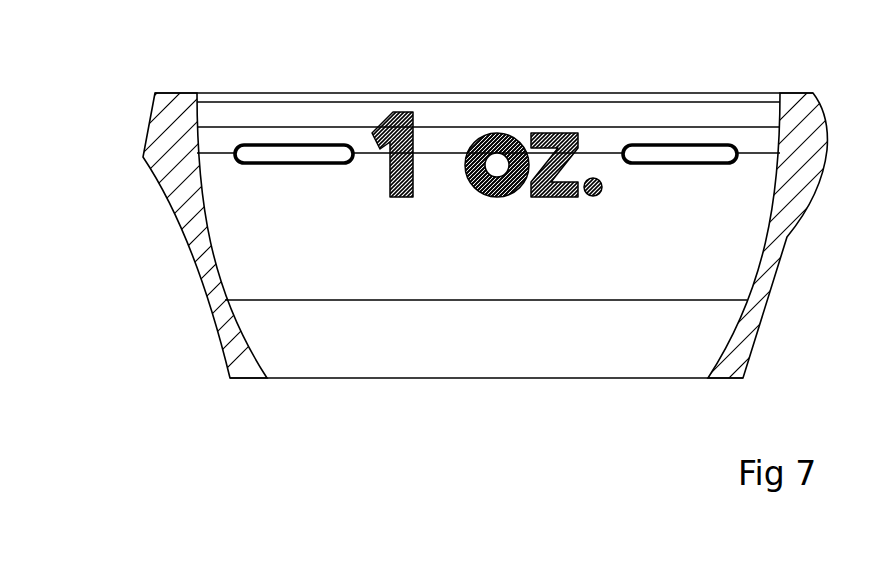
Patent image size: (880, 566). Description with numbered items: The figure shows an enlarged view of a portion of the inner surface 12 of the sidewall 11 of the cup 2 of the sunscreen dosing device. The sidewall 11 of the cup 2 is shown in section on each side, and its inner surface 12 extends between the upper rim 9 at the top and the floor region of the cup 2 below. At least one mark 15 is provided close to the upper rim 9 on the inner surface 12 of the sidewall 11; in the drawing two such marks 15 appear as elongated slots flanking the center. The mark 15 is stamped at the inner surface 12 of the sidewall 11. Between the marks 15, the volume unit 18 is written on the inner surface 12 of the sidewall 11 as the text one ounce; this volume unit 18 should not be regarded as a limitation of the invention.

The cup 2 is at (471, 283).
The upper rim 9 is at (310, 92).
The sidewall 11 is at (227, 340).
The inner surface 12 is at (739, 244).
The mark 15 is at (265, 148).
The volume unit 18 is at (523, 112).